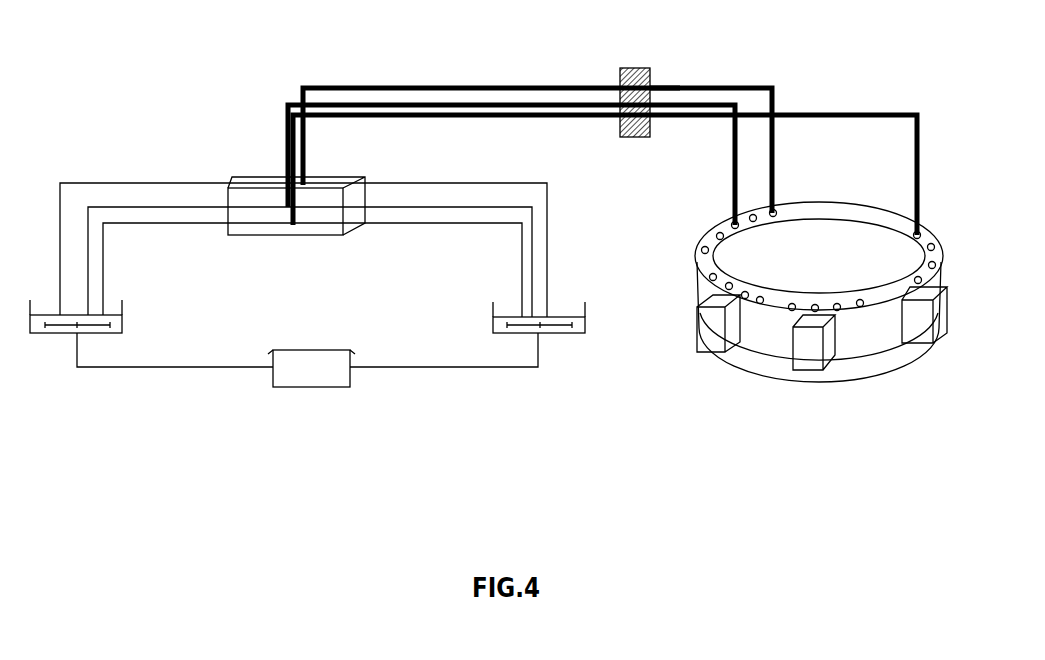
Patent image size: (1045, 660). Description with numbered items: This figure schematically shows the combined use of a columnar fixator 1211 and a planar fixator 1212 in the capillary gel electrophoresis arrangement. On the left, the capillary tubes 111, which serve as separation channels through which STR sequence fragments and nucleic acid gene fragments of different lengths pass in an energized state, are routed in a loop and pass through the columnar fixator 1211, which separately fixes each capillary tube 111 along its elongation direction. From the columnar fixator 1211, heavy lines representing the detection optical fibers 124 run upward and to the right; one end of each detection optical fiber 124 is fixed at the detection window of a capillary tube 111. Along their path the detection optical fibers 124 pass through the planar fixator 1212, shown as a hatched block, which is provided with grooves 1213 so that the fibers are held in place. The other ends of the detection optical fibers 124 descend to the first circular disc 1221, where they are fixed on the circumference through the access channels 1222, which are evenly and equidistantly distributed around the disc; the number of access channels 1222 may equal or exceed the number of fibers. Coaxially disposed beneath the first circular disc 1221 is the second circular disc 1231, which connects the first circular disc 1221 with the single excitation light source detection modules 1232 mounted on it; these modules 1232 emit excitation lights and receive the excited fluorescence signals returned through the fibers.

The capillary tubes 111 is at (148, 182).
The columnar fixator 1211 is at (250, 175).
The detection optical fibers 124 is at (483, 85).
The planar fixator 1212 is at (635, 67).
The grooves 1213 is at (653, 88).
The first circular disc 1221 is at (778, 300).
The access channels 1222 is at (860, 303).
The second circular disc 1231 is at (855, 367).
The single excitation light source detection modules 1232 is at (837, 310).